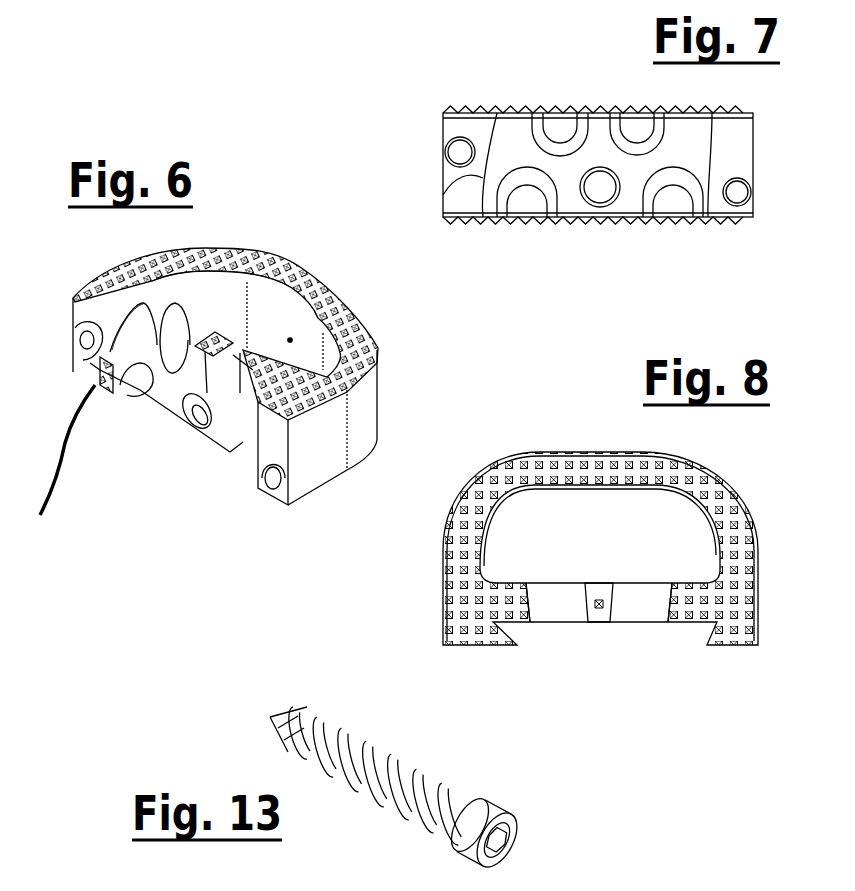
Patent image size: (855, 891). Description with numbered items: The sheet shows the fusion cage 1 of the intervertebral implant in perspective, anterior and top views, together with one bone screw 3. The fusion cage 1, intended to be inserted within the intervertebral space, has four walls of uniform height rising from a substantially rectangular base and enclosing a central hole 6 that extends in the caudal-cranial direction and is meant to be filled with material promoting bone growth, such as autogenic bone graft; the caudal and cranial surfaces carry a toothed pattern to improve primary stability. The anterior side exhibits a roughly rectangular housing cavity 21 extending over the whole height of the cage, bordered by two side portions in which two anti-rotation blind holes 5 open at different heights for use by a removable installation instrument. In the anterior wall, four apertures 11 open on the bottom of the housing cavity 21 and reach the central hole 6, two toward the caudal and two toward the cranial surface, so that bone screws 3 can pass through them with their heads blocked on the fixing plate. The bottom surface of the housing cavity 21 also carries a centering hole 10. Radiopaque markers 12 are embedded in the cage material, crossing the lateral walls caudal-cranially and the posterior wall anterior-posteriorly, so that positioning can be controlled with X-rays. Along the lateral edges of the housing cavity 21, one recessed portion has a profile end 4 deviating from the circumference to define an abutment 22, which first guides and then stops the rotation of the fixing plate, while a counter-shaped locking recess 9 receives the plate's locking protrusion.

In FIG. 6, the fusion cage 1 is at (233, 258).
In FIG. 7, the fusion cage 1 is at (480, 123).
In FIG. 13, the bone screw 3 is at (512, 820).
In FIG. 6, the profile end 4 is at (57, 466).
In FIG. 6, the anti-rotation blind holes 5 is at (85, 357).
In FIG. 7, the anti-rotation blind holes 5 is at (455, 152).
In FIG. 6, the central hole 6 is at (242, 320).
In FIG. 8, the central hole 6 is at (597, 508).
In FIG. 7, the locking recess 9 is at (713, 140).
In FIG. 6, the centering hole 10 is at (192, 433).
In FIG. 7, the centering hole 10 is at (598, 188).
In FIG. 6, the apertures 11 is at (143, 417).
In FIG. 7, the apertures 11 is at (647, 118).
In FIG. 8, the apertures 11 is at (560, 602).
In FIG. 6, the radiopaque markers 12 is at (290, 340).
In FIG. 8, the radiopaque markers 12 is at (460, 562).
In FIG. 6, the housing cavity 21 is at (224, 362).
In FIG. 8, the housing cavity 21 is at (582, 635).
In FIG. 6, the abutment 22 is at (90, 327).
In FIG. 7, the abutment 22 is at (497, 113).